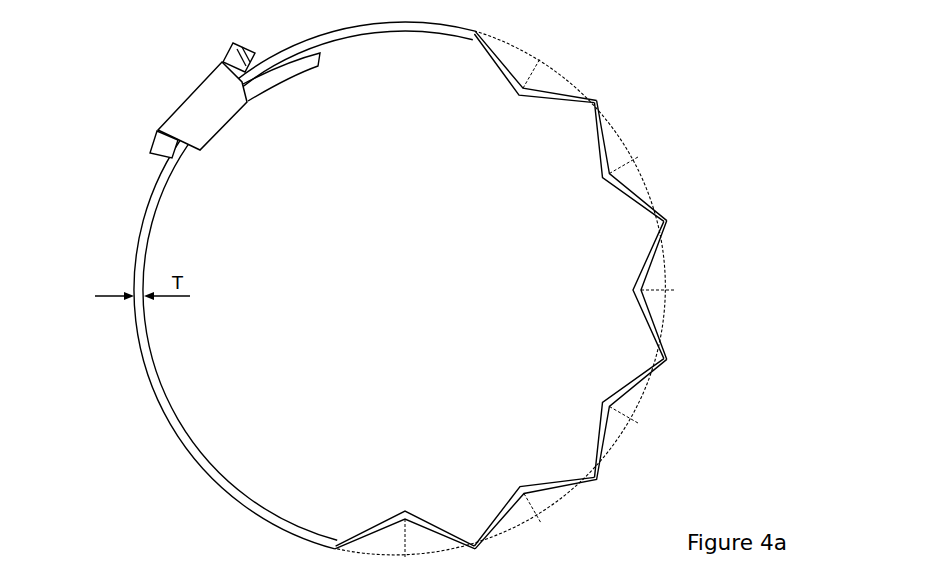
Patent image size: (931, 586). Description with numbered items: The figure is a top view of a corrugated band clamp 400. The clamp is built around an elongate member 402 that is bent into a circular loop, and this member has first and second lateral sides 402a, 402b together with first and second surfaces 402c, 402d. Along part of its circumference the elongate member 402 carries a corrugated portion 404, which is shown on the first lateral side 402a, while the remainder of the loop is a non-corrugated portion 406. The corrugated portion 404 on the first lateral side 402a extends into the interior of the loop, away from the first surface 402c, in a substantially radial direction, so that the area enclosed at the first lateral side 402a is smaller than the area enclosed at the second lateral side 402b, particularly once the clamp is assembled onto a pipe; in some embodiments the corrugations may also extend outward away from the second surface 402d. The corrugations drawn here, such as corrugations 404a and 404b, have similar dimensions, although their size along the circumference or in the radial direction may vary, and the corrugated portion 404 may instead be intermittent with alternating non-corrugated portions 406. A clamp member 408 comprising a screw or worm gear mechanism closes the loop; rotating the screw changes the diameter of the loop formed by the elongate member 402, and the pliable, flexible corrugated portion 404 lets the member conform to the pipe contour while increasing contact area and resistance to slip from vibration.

The corrugated band clamp 400 is at (621, 88).
The elongate member 402 is at (290, 75).
The first lateral side 402a is at (497, 63).
The second lateral side 402b is at (657, 183).
The first surface 402c is at (262, 500).
The second surface 402d is at (622, 452).
The corrugated portion 404 is at (603, 165).
The corrugation 404a is at (610, 407).
The corrugation 404b is at (378, 528).
The non-corrugated portion 406 is at (185, 447).
The clamp member 408 is at (195, 120).